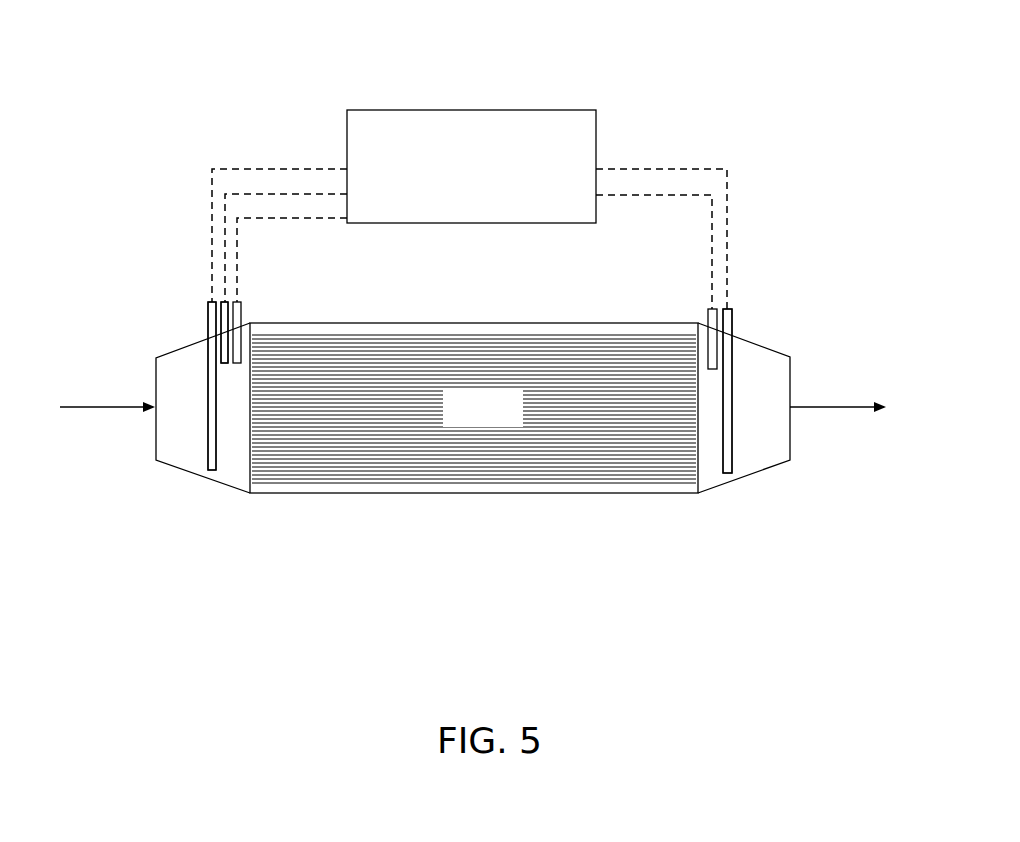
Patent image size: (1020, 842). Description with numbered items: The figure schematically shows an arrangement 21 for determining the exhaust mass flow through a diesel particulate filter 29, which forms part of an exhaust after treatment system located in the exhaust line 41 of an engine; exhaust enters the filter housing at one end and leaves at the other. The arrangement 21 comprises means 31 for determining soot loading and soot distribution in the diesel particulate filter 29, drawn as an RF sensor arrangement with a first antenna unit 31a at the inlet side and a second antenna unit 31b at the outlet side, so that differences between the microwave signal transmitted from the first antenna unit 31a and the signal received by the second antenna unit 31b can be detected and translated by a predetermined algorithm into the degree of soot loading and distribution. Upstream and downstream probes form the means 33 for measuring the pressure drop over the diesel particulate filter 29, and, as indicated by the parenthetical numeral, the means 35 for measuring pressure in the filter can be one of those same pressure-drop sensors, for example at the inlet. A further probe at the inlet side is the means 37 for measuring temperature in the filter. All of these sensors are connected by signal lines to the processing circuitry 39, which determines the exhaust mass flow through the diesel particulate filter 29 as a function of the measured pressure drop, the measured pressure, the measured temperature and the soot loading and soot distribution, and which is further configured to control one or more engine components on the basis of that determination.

The arrangement for determining exhaust mass flow 21 is at (280, 588).
The diesel particulate filter 29 is at (518, 498).
The means for determining soot loading and soot distribution 31 is at (206, 309).
The first antenna unit 31a is at (208, 334).
The second antenna unit 31b is at (733, 357).
The means for measuring pressure drop over the DPF 33 is at (228, 366).
The means for measuring pressure in the DPF 35 is at (228, 422).
The means for measuring temperature in the DPF 37 is at (240, 322).
The processing circuitry 39 is at (534, 110).
The exhaust line 41 is at (110, 412).